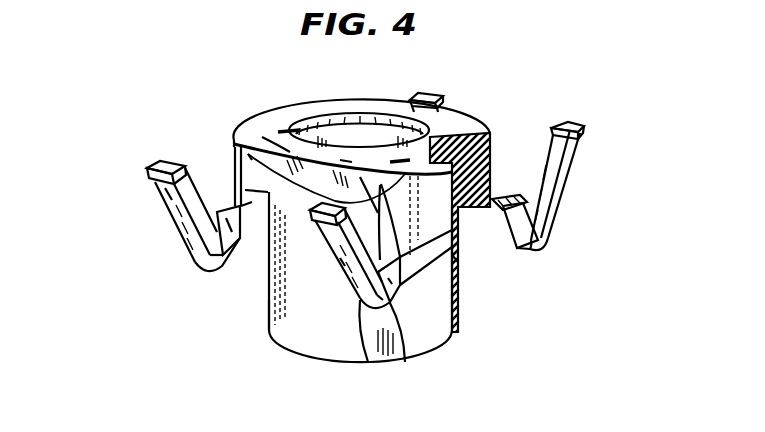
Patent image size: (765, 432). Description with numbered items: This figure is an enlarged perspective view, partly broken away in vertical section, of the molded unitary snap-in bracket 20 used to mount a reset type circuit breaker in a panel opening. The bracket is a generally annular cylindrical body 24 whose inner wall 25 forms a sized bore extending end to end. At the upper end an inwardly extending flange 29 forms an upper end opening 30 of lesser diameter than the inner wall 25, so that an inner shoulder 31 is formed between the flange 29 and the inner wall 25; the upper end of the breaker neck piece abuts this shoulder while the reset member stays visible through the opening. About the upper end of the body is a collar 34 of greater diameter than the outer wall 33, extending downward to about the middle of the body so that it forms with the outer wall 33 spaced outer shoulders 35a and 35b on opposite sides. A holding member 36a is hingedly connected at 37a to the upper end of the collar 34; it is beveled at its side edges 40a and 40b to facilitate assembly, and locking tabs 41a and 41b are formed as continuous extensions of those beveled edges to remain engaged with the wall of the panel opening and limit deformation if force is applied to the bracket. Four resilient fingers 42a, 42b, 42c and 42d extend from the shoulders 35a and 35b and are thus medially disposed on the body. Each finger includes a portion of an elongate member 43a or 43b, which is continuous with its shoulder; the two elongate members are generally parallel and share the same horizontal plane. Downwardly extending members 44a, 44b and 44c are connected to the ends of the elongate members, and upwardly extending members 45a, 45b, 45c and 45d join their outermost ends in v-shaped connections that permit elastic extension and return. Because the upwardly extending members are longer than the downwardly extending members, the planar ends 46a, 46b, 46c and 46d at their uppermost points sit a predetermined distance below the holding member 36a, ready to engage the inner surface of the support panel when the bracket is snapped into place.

The snap-in bracket 20 is at (296, 88).
The cylindrical body 24 is at (264, 340).
The inner wall 25 is at (366, 133).
The flange 29 is at (468, 128).
The upper end opening 30 is at (379, 120).
The inner shoulder 31 is at (480, 157).
The outer wall 33 is at (264, 300).
The collar 34 is at (428, 208).
The outer shoulder 35a is at (186, 168).
The outer shoulder 35b is at (462, 260).
The holding member 36a is at (262, 137).
The hinged connection 37a is at (352, 148).
The beveled side edge 40a is at (250, 158).
The beveled side edge 40b is at (390, 278).
The locking tab 41a is at (236, 203).
The locking tab 41b is at (347, 258).
The resilient finger 42a is at (155, 216).
The resilient finger 42b is at (389, 292).
The resilient finger 42c is at (597, 169).
The resilient finger 42d is at (469, 62).
The elongate member 43a is at (262, 282).
The elongate member 43b is at (458, 318).
The downwardly extending member 44a is at (198, 246).
The downwardly extending member 44b is at (405, 362).
The downwardly extending member 44c is at (548, 240).
The upwardly extending member 45a is at (176, 212).
The upwardly extending member 45b is at (367, 362).
The upwardly extending member 45c is at (563, 180).
The upwardly extending member 45d is at (432, 107).
The planar end 46a is at (147, 170).
The planar end 46b is at (312, 222).
The planar end 46c is at (570, 127).
The planar end 46d is at (422, 84).